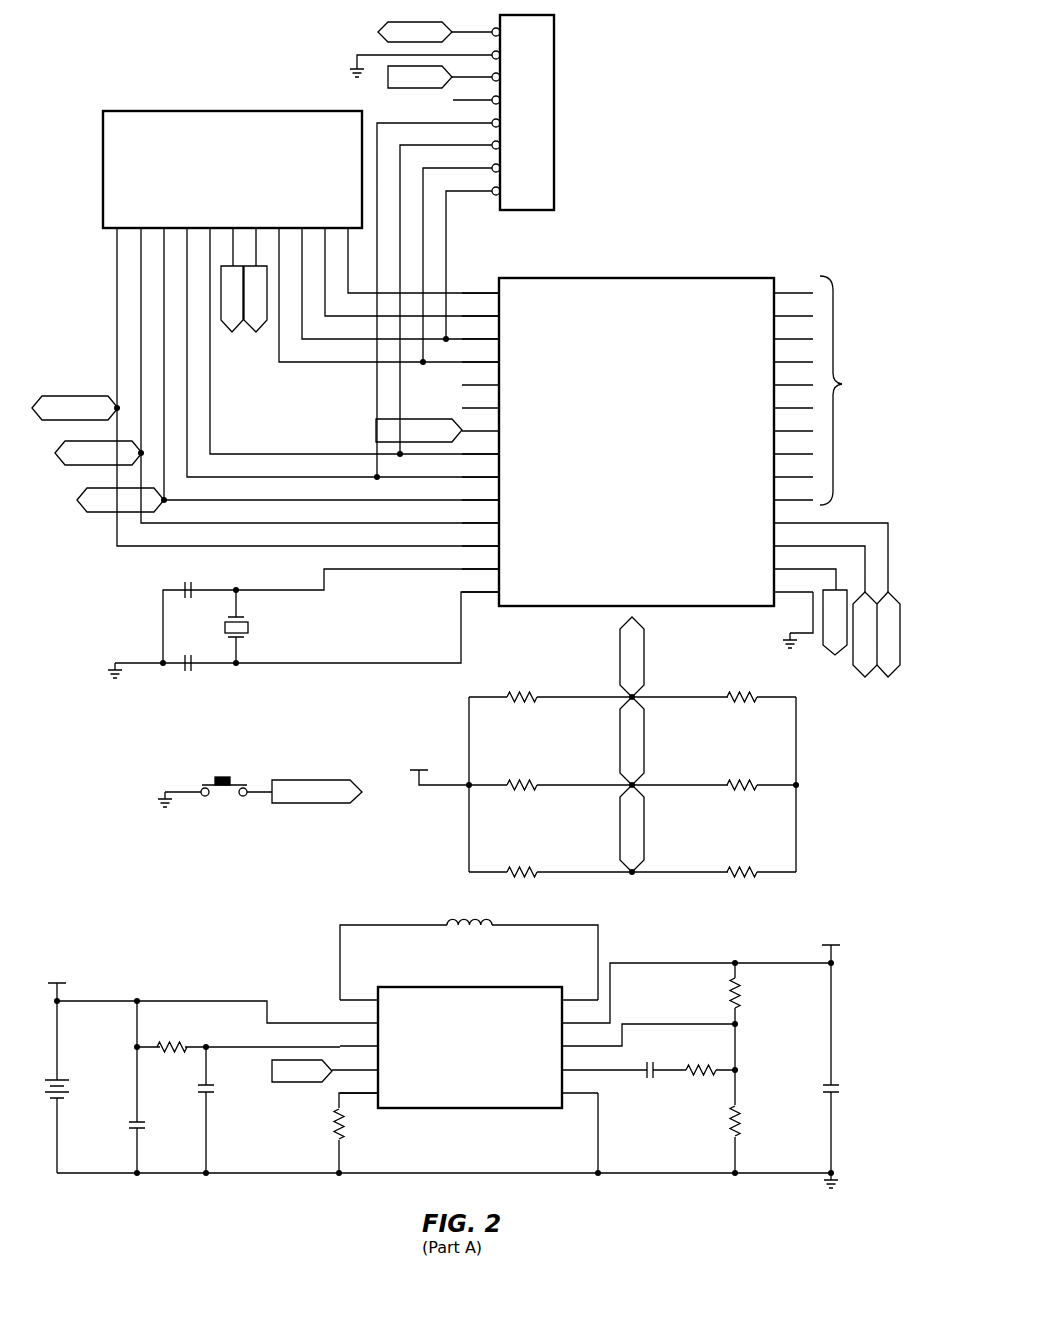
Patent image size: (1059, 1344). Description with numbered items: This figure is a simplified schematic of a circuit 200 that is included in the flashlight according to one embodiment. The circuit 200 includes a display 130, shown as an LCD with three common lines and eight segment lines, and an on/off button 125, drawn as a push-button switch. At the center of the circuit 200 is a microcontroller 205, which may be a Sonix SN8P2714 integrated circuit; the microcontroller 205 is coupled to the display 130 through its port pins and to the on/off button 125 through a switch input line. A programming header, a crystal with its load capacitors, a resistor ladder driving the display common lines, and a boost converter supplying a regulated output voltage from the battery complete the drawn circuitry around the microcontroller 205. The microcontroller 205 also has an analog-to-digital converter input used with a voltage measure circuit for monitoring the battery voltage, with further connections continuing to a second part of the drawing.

The circuit 200 is at (739, 145).
The display 130 is at (233, 111).
The microcontroller 205 is at (637, 278).
The on/off button 125 is at (224, 778).